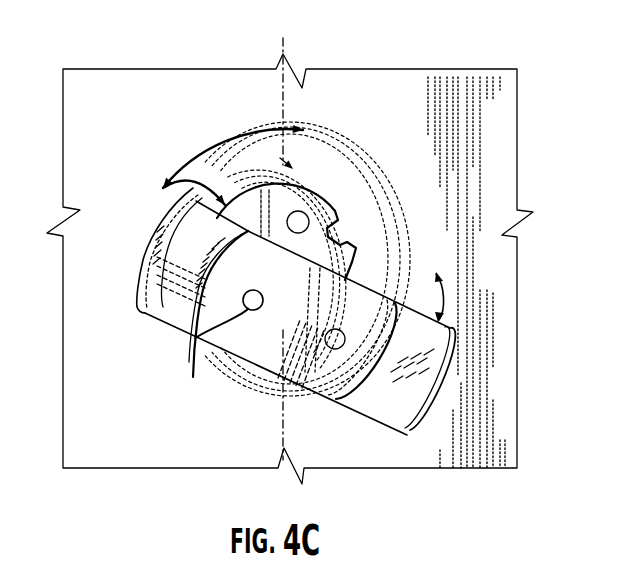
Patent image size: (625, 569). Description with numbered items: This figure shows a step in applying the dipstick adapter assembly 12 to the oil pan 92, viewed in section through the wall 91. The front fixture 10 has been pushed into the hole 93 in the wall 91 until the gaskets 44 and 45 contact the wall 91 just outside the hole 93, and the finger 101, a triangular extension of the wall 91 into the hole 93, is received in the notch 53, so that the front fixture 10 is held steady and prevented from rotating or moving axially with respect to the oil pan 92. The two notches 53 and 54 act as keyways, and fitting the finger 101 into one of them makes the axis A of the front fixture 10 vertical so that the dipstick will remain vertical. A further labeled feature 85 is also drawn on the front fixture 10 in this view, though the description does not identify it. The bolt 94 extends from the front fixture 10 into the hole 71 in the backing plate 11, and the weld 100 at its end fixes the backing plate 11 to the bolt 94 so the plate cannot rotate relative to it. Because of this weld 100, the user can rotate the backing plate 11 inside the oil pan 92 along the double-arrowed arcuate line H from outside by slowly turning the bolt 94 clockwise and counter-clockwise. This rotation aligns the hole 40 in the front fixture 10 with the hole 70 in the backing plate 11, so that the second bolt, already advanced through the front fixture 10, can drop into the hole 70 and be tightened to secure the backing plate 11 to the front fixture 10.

The front fixture 10 is at (193, 188).
The backing plate 11 is at (417, 429).
The dipstick adapter assembly 12 is at (120, 120).
The hole 40 is at (285, 281).
The gasket 44 is at (240, 172).
The gasket 45 is at (205, 166).
The notch 53 is at (320, 198).
The notch 54 is at (358, 248).
The hole 70 is at (342, 347).
The hole 71 is at (202, 323).
The stop 85 is at (277, 152).
The wall 91 is at (487, 115).
The oil pan 92 is at (492, 64).
The hole 93 is at (304, 183).
The bolt 94 is at (246, 294).
The weld 100 is at (252, 310).
The finger 101 is at (290, 354).
The axis A is at (287, 32).
The double-arrowed arcuate line H is at (443, 307).